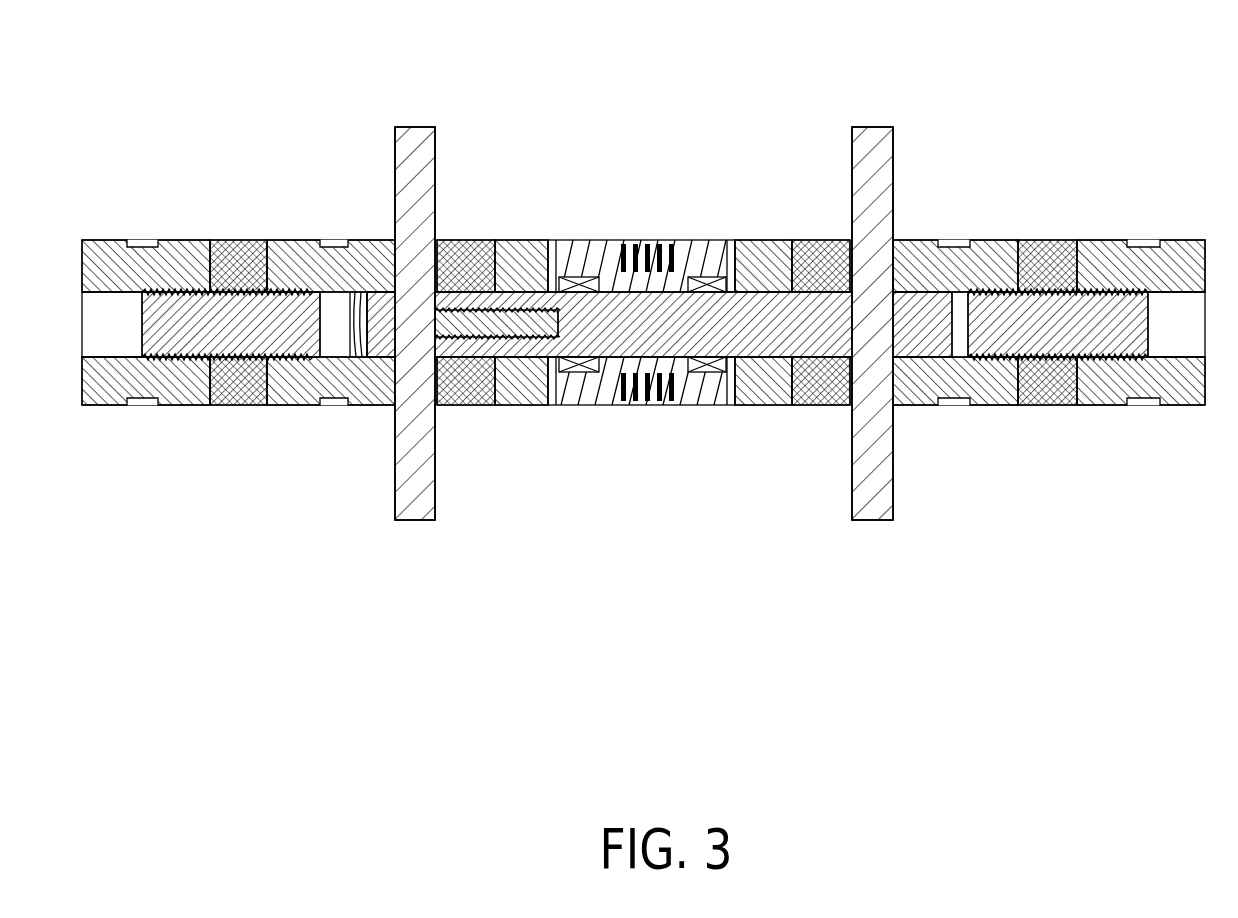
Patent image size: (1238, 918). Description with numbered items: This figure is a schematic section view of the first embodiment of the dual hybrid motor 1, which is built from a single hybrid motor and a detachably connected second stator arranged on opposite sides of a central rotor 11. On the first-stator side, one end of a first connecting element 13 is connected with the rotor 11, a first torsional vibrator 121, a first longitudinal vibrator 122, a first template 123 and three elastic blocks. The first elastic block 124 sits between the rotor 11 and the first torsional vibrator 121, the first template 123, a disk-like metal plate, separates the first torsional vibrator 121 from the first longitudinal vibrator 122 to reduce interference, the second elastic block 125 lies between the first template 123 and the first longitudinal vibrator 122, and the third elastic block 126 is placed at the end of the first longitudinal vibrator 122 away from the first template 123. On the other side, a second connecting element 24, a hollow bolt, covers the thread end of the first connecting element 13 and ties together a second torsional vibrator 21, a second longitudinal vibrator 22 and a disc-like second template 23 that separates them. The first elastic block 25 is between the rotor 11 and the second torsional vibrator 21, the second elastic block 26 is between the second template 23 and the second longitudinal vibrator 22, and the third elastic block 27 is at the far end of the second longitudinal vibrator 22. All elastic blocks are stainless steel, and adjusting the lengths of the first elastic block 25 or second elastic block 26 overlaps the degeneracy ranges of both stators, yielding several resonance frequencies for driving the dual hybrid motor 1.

The dual hybrid motor 1 is at (108, 105).
The rotor 11 is at (594, 240).
The first connecting element 13 is at (718, 323).
The second torsional vibrator 21 is at (480, 262).
The second longitudinal vibrator 22 is at (236, 406).
The second template 23 is at (414, 505).
The second connecting element 24 is at (480, 340).
The first elastic block 25 is at (520, 406).
The second elastic block 26 is at (332, 262).
The third elastic block 27 is at (150, 270).
The first torsional vibrator 121 is at (821, 406).
The first longitudinal vibrator 122 is at (1054, 406).
The first template 123 is at (866, 505).
The first elastic block 124 is at (760, 262).
The second elastic block 125 is at (1000, 262).
The third elastic block 126 is at (1175, 267).